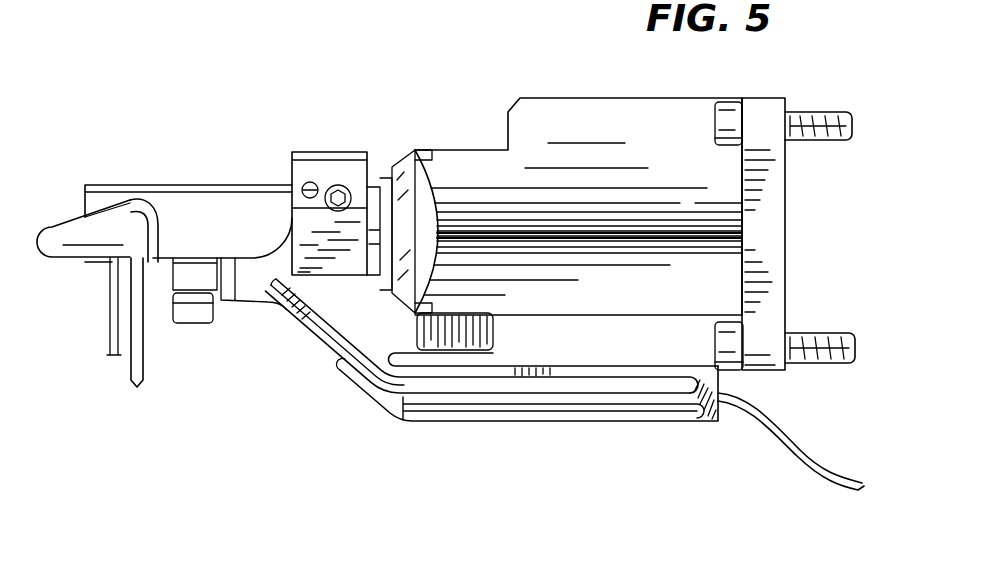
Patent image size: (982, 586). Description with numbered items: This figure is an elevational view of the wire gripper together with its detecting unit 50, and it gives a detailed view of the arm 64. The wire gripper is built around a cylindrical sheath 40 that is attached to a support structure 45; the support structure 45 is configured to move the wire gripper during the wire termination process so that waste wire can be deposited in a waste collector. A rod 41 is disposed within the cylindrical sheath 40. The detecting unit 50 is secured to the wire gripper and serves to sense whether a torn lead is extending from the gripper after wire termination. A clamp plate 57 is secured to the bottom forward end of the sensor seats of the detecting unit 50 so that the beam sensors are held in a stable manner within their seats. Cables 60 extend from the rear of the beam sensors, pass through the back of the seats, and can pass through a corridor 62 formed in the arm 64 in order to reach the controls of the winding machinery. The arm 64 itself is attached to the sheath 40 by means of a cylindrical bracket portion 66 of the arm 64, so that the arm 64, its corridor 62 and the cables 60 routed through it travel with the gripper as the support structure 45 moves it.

The cylindrical sheath 40 is at (196, 212).
The rod 41 is at (95, 238).
The support structure 45 is at (552, 162).
The detecting unit 50 is at (292, 331).
The clamp plate 57 is at (180, 297).
The cables 60 is at (347, 360).
The corridor 62 is at (403, 400).
The arm 64 is at (322, 357).
The cylindrical bracket portion 66 is at (330, 172).